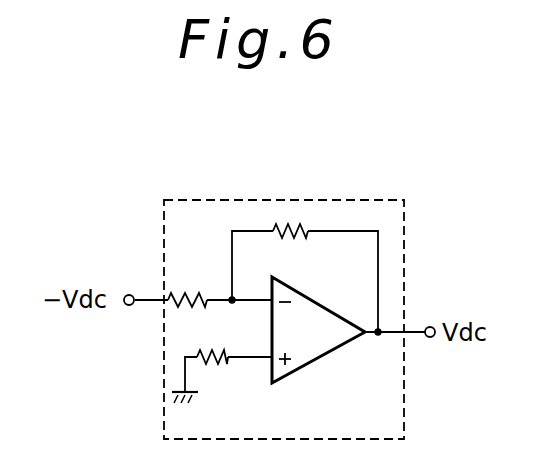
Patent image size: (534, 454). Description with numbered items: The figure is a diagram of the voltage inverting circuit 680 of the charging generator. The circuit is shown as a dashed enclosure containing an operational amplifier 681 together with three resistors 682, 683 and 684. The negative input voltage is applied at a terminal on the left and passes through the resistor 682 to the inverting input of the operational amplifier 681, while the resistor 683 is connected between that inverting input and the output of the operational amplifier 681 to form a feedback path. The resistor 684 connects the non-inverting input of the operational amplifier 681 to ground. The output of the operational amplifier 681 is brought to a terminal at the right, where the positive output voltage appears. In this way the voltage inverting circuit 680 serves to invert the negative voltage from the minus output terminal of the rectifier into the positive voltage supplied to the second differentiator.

The voltage inverting circuit 680 is at (416, 160).
The operational amplifier 681 is at (338, 350).
The resistor 682 is at (193, 288).
The resistor 683 is at (287, 222).
The resistor 684 is at (205, 347).